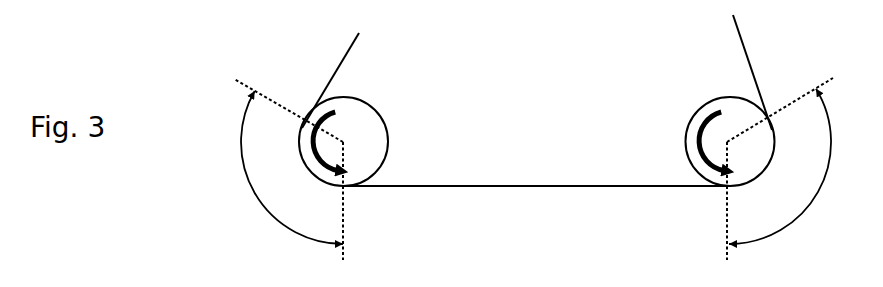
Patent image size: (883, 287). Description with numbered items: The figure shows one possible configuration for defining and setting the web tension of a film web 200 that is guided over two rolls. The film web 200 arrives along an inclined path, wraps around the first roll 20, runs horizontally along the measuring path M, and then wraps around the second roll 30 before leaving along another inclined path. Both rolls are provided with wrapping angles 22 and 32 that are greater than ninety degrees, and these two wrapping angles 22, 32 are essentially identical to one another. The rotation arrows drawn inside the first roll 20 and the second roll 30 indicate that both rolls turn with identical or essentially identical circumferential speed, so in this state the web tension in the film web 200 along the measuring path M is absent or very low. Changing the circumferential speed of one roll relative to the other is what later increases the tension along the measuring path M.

The film web 200 is at (340, 60).
The first roll 20 is at (377, 122).
The wrapping angle 22 is at (282, 170).
The second roll 30 is at (720, 107).
The wrapping angle 32 is at (788, 169).
The measuring path M is at (517, 170).